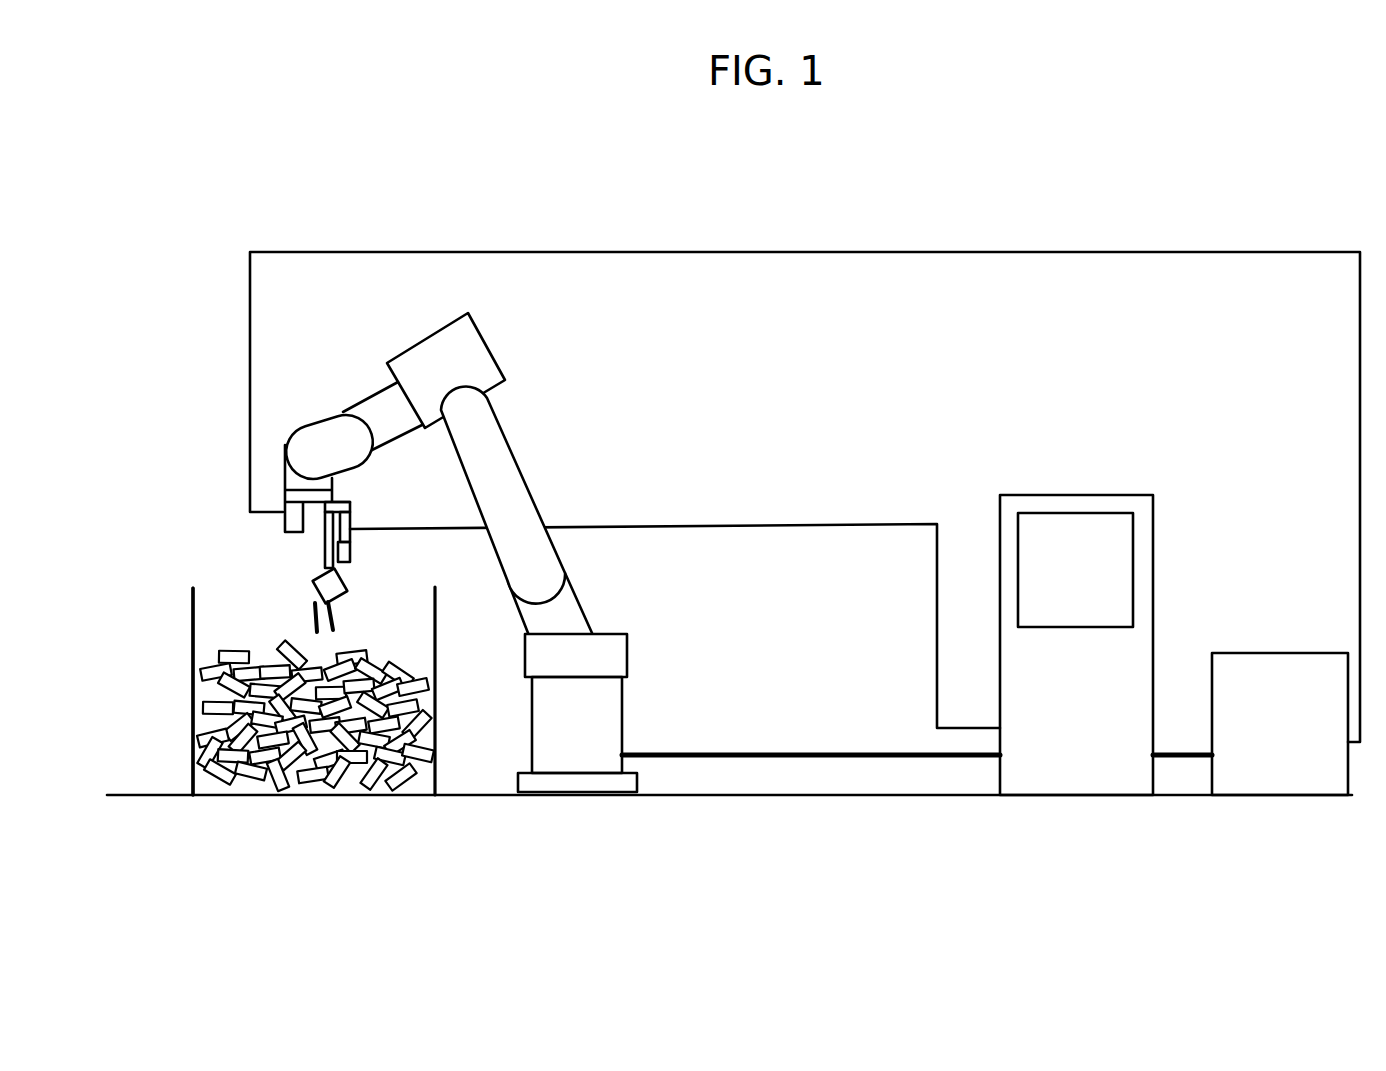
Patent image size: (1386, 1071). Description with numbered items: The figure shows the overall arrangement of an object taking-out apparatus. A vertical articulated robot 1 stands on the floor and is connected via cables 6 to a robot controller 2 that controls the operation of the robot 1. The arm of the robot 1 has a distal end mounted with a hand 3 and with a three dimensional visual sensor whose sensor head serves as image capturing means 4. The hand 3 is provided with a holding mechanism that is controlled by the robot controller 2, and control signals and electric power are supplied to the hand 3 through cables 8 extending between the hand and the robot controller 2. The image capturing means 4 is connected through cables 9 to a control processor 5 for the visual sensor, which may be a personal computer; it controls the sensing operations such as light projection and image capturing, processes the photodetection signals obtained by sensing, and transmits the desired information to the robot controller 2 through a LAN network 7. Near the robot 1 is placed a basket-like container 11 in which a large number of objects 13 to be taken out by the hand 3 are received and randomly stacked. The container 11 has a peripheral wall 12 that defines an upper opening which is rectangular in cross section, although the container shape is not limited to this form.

The vertical articulated robot 1 is at (608, 598).
The robot controller 2 is at (1065, 482).
The hand 3 is at (313, 598).
The image capturing means 4 is at (283, 528).
The control processor 5 is at (1257, 647).
The cables 6 is at (842, 749).
The LAN network 7 is at (1177, 749).
The cables 8 is at (818, 528).
The cables 9 is at (852, 258).
The container 11 is at (166, 728).
The peripheral wall 12 is at (197, 610).
The objects 13 is at (379, 660).